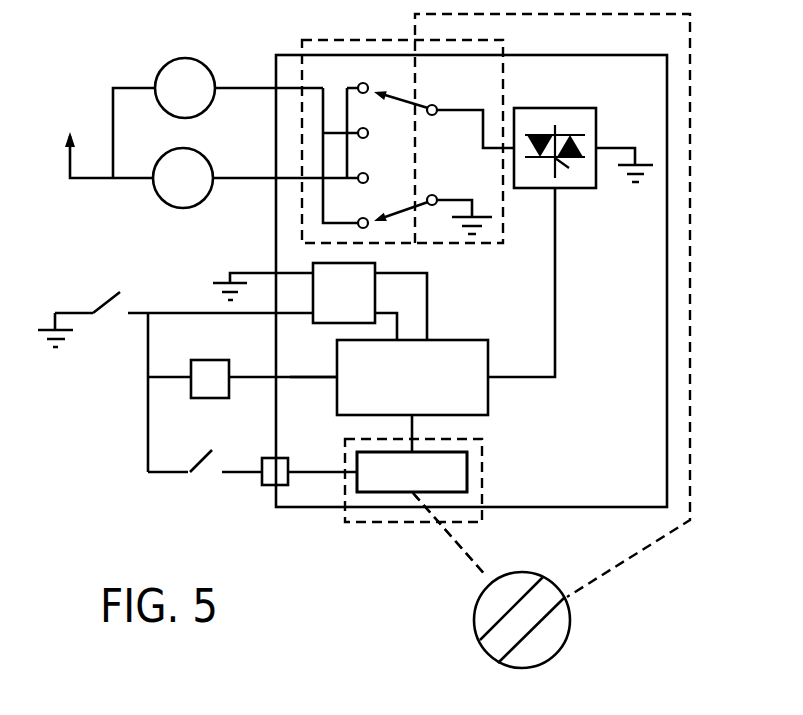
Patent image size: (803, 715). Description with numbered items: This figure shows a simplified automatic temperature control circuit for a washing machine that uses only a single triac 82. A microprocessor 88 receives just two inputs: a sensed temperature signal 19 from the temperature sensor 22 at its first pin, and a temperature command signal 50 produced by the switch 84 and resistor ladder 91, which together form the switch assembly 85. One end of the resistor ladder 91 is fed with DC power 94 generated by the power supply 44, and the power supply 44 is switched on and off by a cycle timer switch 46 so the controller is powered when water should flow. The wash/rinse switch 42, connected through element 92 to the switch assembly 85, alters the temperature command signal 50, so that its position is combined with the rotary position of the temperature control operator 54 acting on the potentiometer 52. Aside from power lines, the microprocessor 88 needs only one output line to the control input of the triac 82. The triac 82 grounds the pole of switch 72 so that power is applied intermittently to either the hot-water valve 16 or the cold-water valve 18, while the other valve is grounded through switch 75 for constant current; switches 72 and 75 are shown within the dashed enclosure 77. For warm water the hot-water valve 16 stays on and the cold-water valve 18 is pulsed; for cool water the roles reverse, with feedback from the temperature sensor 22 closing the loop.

The hot-water valve 16 is at (218, 118).
The cold-water valve 18 is at (211, 170).
The sensed temperature signal 19 is at (302, 376).
The temperature sensor 22 is at (211, 360).
The wash/rinse switch 42 is at (206, 486).
The power supply 44 is at (294, 293).
The cycle timer switch 46 is at (110, 325).
The temperature command signal 50 is at (415, 432).
The potentiometer 52 is at (470, 486).
The temperature control operator 54 is at (476, 608).
The switch 72 is at (439, 86).
The switch 75 is at (410, 233).
The relay 77 is at (312, 38).
The triac 82 is at (597, 125).
The switch 84 is at (412, 472).
The switch assembly 85 is at (390, 38).
The microprocessor 88 is at (412, 377).
The resistor ladder 91 is at (412, 472).
The sensor 92 is at (290, 458).
The DC power 94 is at (400, 330).